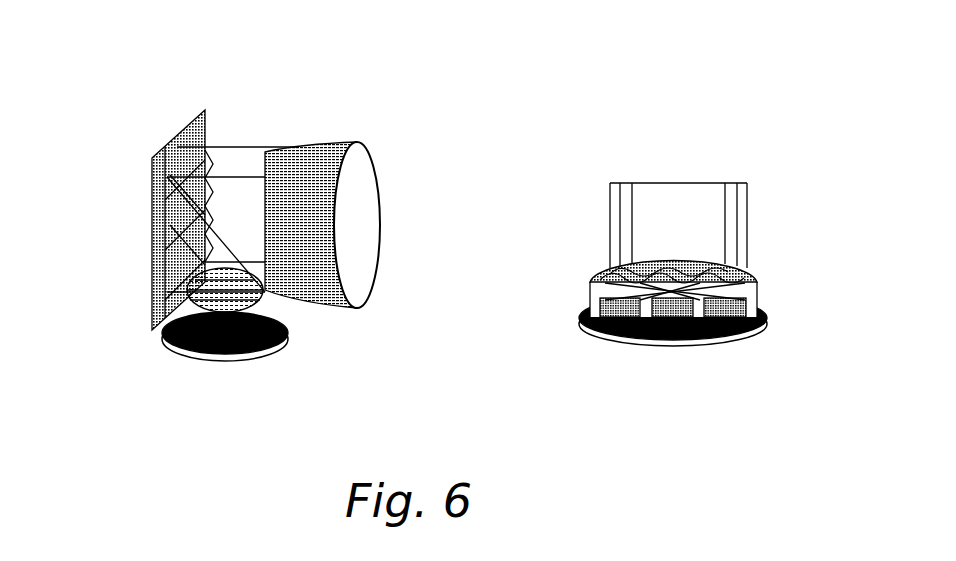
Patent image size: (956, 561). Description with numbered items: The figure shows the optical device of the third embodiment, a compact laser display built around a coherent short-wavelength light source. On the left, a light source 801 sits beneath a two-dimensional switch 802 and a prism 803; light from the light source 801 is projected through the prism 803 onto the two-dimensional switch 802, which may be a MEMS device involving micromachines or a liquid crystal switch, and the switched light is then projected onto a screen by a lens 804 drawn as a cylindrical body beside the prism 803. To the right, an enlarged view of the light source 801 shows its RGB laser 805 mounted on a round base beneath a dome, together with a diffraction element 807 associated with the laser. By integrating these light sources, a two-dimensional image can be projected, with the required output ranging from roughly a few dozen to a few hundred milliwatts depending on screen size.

The light source 801 is at (235, 363).
The two-dimensional switch 802 is at (158, 158).
The prism 803 is at (243, 170).
The lens 804 is at (353, 203).
The RGB laser 805 is at (708, 343).
The diffraction element 807 is at (705, 282).